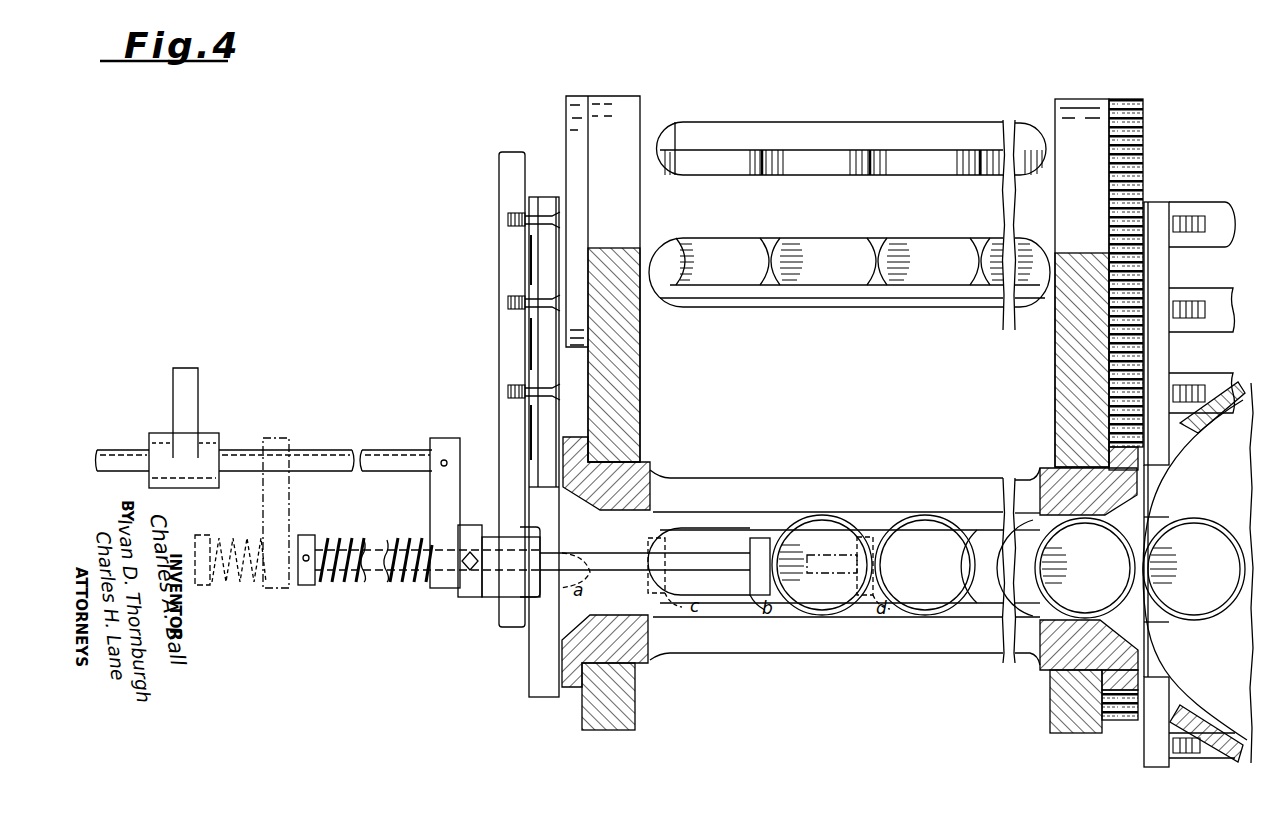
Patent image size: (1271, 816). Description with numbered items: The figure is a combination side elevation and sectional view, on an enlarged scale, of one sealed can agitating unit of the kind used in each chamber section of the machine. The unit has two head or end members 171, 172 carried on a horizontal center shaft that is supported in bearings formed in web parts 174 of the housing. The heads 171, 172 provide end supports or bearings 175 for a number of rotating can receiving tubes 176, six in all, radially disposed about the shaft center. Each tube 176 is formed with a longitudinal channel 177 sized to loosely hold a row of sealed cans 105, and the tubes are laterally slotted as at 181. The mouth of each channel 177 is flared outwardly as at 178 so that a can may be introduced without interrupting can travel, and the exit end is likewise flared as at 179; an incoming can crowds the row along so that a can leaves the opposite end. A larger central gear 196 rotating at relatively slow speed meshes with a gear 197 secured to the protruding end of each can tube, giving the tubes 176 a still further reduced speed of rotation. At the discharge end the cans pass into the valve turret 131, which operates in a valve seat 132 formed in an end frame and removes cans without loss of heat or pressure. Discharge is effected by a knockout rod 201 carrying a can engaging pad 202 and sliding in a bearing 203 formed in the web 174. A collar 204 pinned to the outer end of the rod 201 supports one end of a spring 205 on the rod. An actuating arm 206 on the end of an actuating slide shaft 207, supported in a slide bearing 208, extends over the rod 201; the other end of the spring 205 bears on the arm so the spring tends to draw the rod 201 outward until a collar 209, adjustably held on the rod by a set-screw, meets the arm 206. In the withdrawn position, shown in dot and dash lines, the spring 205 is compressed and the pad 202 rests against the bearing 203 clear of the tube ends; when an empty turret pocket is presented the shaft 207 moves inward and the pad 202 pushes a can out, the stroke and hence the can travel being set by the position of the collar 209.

The sealed cans 105 is at (828, 530).
The valve turret 131 is at (1198, 573).
The valve seat 132 is at (1207, 722).
The head or end member 171 is at (640, 370).
The head or end member 172 is at (1068, 354).
The web part 174 is at (512, 346).
The end supports or bearings 175 is at (615, 458).
The rotating can receiving tube 176 is at (780, 310).
The longitudinal channel 177 is at (556, 607).
The flared mouth or can entrance end 178 is at (588, 616).
The flared exit end 179 is at (1138, 508).
The lateral slot 181 is at (913, 160).
The larger central gear 196 is at (1118, 392).
The gear 197 is at (1148, 138).
The knockout rod 201 is at (721, 562).
The can engaging pad 202 is at (566, 524).
The bearing 203 is at (500, 608).
The collar 204 is at (202, 585).
The spring 205 is at (247, 585).
The actuating arm 206 is at (445, 445).
The actuating slide shaft 207 is at (242, 452).
The slide bearing 208 is at (190, 385).
The collar 209 is at (469, 525).